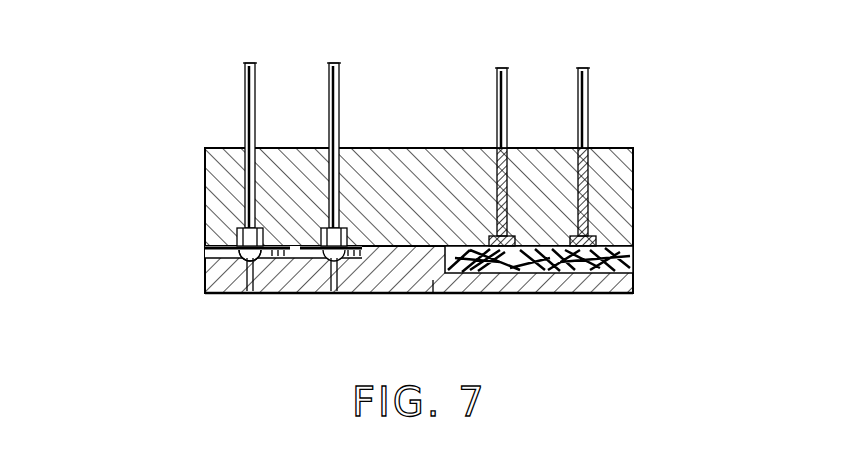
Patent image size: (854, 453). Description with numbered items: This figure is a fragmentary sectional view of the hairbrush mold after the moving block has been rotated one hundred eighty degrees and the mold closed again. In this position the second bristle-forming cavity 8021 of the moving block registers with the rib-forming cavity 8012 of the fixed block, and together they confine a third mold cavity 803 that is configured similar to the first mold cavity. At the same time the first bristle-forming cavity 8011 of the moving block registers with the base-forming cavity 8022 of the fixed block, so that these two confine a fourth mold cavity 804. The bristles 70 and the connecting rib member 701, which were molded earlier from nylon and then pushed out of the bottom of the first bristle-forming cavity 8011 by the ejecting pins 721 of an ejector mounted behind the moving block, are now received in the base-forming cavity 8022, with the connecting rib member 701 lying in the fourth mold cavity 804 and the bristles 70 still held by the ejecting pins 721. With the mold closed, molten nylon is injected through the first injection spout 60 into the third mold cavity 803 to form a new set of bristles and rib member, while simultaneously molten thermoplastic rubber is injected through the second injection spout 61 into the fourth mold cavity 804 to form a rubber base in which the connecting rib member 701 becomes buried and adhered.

The bristles 70 is at (634, 188).
The connecting rib member 701 is at (632, 292).
The ejecting pins 721 is at (330, 82).
The first bristle-forming cavity 8011 is at (598, 166).
The rib-forming cavity 8012 is at (207, 268).
The second bristle-forming cavity 8021 is at (207, 170).
The base-forming cavity 8022 is at (618, 266).
The third mold cavity 803 is at (119, 178).
The fourth mold cavity 804 is at (712, 118).
The first injection spout 60 is at (248, 290).
The second injection spout 61 is at (433, 296).